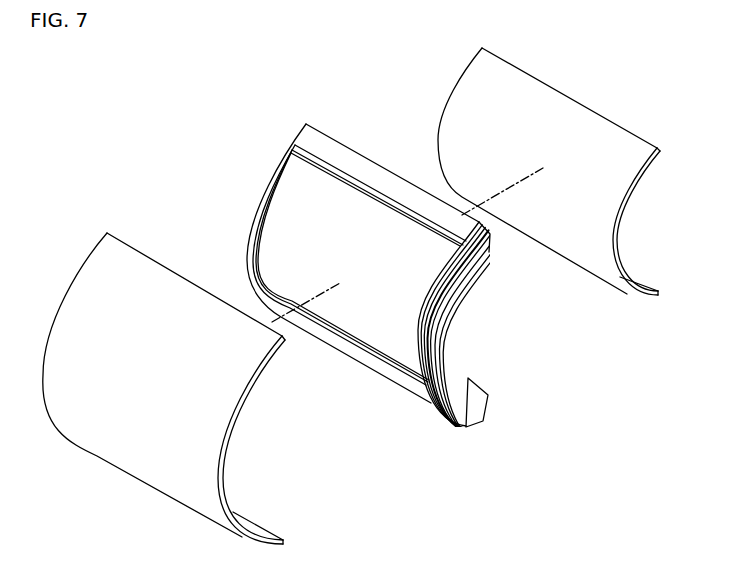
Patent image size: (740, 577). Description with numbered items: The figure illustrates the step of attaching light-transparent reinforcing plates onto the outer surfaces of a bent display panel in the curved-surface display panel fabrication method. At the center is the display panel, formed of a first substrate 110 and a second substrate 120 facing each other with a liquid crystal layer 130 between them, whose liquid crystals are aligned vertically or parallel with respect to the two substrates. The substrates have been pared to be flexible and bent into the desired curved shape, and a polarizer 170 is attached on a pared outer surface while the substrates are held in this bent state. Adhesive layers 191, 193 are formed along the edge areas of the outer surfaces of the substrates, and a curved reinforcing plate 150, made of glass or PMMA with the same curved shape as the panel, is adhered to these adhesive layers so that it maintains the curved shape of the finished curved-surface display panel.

The first substrate 110 is at (659, 295).
The second substrate 120 is at (473, 425).
The liquid crystal layer 130 is at (435, 348).
The reinforcing plate 150 is at (284, 546).
The polarizer 170 is at (456, 286).
The adhesive layer 191 is at (452, 311).
The adhesive layer 193 is at (403, 389).